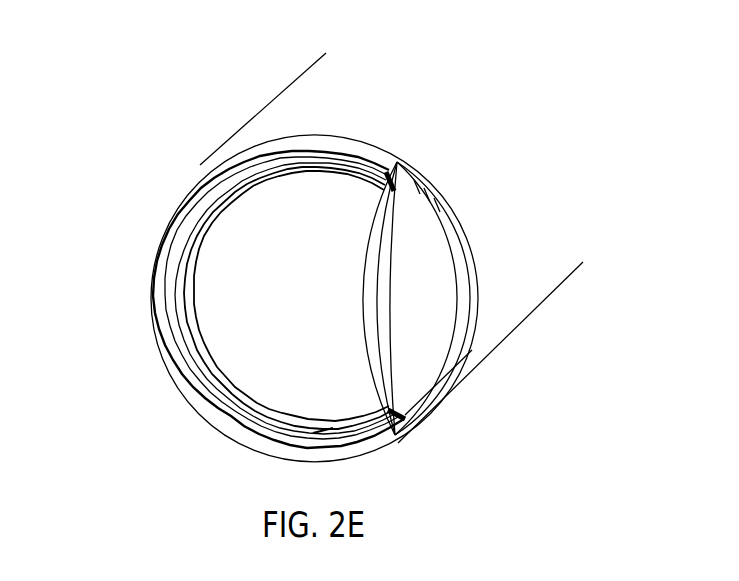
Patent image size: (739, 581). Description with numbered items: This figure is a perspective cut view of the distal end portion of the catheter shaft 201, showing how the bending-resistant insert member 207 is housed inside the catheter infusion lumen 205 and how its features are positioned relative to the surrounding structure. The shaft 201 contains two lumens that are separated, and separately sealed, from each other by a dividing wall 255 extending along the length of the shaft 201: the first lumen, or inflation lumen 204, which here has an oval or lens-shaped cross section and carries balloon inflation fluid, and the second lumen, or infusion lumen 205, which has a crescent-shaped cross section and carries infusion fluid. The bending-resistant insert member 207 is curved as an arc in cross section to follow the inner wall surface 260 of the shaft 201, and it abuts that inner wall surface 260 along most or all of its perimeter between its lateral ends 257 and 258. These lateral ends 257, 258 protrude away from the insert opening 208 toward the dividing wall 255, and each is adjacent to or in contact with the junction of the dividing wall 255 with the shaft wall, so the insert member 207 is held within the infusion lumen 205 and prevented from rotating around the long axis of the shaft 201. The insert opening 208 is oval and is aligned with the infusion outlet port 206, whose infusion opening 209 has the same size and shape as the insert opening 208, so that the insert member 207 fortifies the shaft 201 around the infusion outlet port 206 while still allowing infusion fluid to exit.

The shaft 201 is at (250, 127).
The first lumen (inflation lumen) 204 is at (405, 316).
The second lumen (infusion lumen) 205 is at (301, 279).
The infusion outlet port 206 is at (183, 210).
The bending-resistant insert member 207 is at (227, 387).
The insert opening 208 is at (205, 292).
The infusion opening 209 is at (139, 278).
The dividing wall 255 is at (392, 243).
The lateral end 257 is at (387, 178).
The lateral end 258 is at (390, 418).
The inner wall surface 260 is at (313, 433).